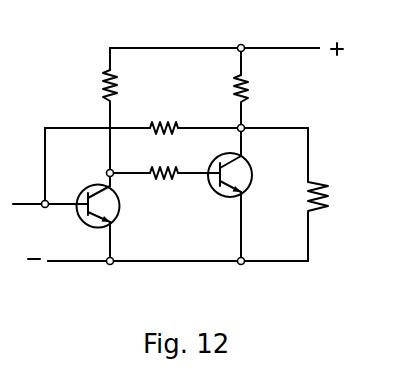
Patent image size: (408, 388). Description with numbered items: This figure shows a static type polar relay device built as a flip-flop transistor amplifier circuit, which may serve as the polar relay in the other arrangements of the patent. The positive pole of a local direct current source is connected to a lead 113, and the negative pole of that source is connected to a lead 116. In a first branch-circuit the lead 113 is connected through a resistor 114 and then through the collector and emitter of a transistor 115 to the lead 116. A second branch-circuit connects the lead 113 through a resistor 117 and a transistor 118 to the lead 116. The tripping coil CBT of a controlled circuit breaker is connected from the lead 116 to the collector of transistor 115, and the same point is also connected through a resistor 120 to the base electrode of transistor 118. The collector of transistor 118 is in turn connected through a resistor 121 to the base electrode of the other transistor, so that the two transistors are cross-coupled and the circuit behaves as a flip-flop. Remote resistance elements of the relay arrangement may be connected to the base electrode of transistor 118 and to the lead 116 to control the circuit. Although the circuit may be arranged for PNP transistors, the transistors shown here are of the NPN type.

The lead 113 is at (301, 47).
The resistor 114 is at (251, 87).
The transistor 115 is at (253, 173).
The lead 116 is at (58, 262).
The resistor 117 is at (122, 84).
The transistor 118 is at (89, 180).
The resistor 120 is at (160, 120).
The resistor 121 is at (157, 168).
The tripping coil CBT is at (332, 195).